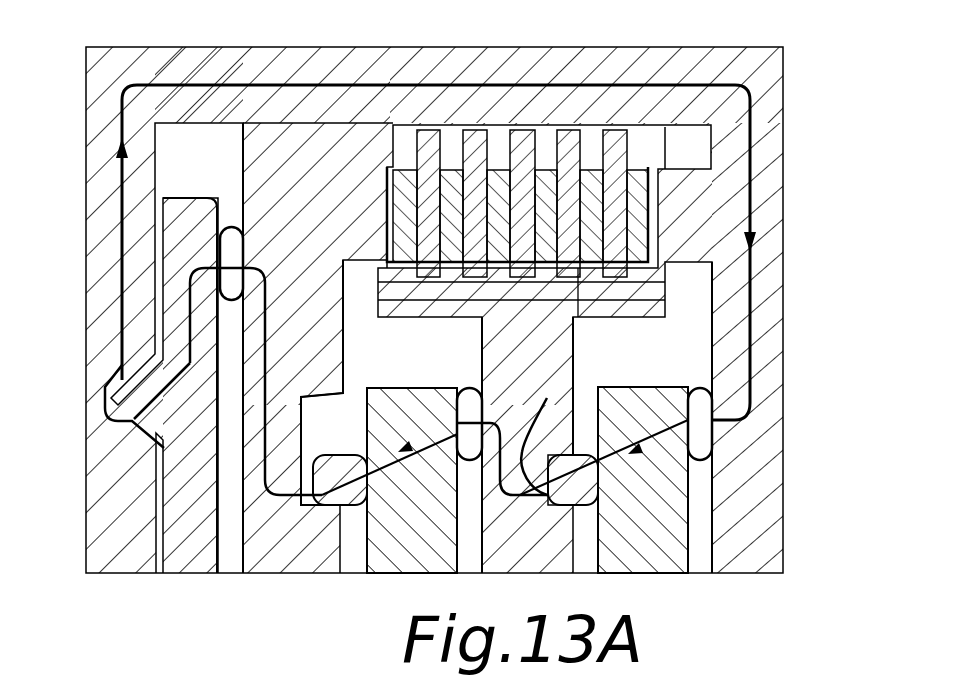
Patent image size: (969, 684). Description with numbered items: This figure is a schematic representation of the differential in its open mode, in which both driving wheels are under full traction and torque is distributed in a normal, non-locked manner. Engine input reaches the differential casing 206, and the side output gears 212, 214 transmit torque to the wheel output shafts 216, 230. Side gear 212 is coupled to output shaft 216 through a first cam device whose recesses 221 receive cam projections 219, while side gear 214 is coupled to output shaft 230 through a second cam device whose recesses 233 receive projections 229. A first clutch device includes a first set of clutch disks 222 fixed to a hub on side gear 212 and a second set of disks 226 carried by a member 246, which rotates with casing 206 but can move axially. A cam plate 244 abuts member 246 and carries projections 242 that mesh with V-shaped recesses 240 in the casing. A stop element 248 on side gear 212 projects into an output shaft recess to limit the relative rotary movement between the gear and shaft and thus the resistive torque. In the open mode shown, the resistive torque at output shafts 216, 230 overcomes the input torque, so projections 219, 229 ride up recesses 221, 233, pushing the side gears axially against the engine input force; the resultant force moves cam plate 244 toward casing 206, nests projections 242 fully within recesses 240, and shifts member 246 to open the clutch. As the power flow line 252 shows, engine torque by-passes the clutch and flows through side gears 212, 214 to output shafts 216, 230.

The differential casing 206 is at (748, 62).
The power flow line 252 is at (120, 202).
The V-shaped recesses 240 is at (147, 377).
The projections 242 is at (148, 431).
The cam plate 244 is at (186, 556).
The side output gear 214 is at (266, 556).
The recesses 233 is at (311, 402).
The output shaft 230 is at (372, 558).
The projections 229 is at (333, 468).
The recesses 221 is at (532, 398).
The second set of disks 226 is at (515, 138).
The first set of clutch disks 222 is at (492, 267).
The member 246 is at (683, 135).
The side output gear 212 is at (560, 330).
The stop element 248 is at (568, 395).
The cam projections 219 is at (560, 470).
The wheel output shaft 216 is at (700, 562).